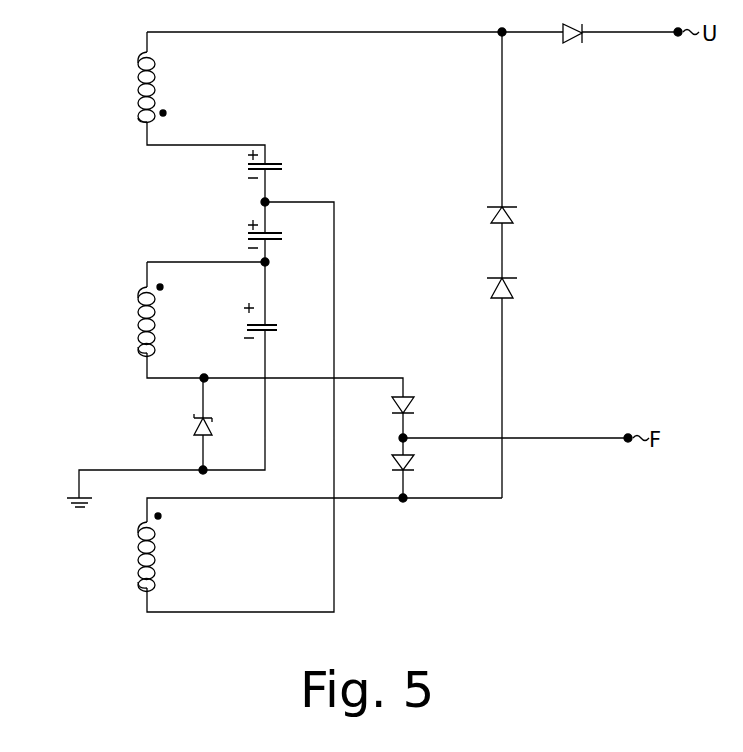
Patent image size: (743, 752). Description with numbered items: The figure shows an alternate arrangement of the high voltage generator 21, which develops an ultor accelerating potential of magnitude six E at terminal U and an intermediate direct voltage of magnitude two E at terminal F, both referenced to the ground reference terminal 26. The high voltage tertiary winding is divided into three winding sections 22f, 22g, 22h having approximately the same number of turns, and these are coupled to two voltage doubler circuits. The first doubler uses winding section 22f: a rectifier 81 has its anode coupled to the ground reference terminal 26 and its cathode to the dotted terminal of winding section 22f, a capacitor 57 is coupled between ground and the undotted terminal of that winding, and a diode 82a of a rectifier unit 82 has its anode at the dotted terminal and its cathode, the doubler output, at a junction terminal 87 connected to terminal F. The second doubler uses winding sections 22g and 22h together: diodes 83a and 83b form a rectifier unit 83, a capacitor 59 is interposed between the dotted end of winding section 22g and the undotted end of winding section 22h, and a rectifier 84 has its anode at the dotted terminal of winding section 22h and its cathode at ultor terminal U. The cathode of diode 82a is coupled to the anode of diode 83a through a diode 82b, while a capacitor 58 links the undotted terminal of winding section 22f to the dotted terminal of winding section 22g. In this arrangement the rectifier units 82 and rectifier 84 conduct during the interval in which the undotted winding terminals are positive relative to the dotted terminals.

The high voltage generator 21 is at (653, 202).
The high voltage winding section 22f is at (207, 331).
The high voltage winding section 22g is at (212, 572).
The high voltage winding section 22h is at (222, 99).
The ground reference terminal 26 is at (71, 507).
The capacitor 57 is at (279, 329).
The capacitor 58 is at (249, 236).
The capacitor 59 is at (248, 166).
The rectifier 81 is at (213, 430).
The rectifier unit 82 is at (407, 440).
The diode 82a is at (414, 416).
The diode 82b is at (414, 473).
The rectifier unit 83 is at (528, 249).
The diode 83a is at (513, 291).
The diode 83b is at (510, 217).
The rectifier 84 is at (572, 42).
The junction terminal 87 is at (407, 436).